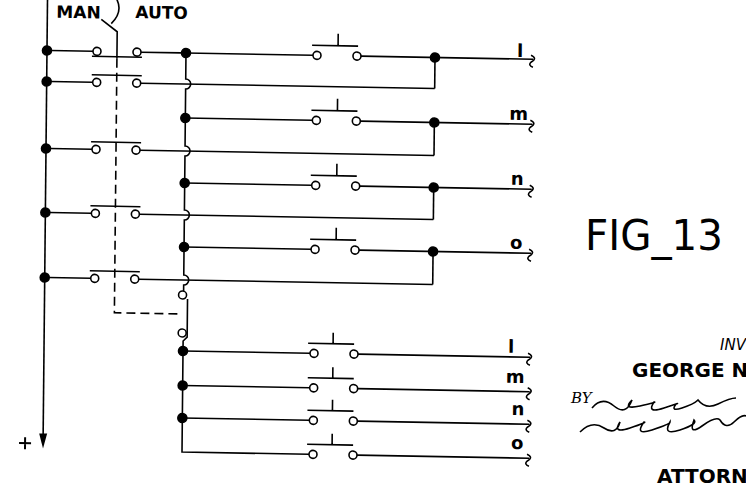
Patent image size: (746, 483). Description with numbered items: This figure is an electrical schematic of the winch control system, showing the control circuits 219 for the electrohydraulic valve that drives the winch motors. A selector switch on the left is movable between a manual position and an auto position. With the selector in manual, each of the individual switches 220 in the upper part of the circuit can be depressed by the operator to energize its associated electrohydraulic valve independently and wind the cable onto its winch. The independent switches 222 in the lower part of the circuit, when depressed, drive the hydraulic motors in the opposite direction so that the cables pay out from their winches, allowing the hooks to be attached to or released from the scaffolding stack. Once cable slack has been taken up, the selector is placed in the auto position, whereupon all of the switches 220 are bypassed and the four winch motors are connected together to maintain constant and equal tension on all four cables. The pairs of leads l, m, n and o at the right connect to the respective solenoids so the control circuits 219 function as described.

The control circuits 219 is at (260, 40).
The individual switches 220 is at (352, 44).
The independent switches 222 is at (352, 343).